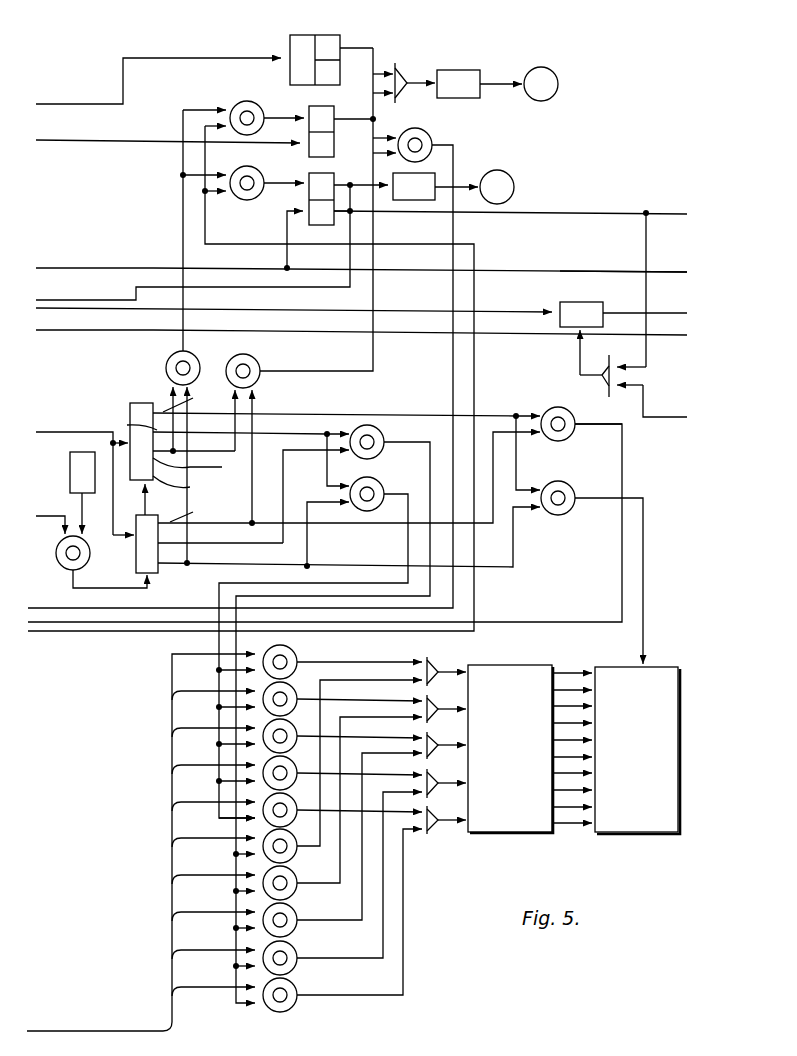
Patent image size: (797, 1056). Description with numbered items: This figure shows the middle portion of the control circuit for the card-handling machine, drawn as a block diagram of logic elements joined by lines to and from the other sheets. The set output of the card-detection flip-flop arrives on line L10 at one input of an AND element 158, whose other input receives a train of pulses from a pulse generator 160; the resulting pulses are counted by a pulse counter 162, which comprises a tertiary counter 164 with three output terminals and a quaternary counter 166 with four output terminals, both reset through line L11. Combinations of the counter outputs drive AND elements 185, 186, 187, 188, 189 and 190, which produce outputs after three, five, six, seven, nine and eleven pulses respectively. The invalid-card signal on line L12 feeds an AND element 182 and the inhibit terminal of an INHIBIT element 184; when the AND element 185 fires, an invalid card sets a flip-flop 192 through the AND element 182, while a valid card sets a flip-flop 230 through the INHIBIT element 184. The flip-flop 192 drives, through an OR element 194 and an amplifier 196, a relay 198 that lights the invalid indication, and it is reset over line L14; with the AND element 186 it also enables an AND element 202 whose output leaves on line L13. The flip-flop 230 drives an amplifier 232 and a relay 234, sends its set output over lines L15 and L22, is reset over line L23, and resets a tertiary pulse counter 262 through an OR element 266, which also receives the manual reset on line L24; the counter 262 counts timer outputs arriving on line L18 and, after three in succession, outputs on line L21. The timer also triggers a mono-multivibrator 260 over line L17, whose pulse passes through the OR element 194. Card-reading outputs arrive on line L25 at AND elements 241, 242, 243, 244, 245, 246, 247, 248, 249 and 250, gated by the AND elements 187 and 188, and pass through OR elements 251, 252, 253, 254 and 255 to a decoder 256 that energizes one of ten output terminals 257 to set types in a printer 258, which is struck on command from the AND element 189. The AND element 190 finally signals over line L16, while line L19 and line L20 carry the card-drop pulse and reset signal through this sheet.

The AND element 158 is at (58, 562).
The pulse generator 160 is at (70, 461).
The pulse counter 162 is at (141, 509).
The tertiary counter 164 is at (136, 572).
The quaternary counter 166 is at (137, 403).
The AND element 182 is at (269, 103).
The INHIBIT element 184 is at (254, 201).
The AND element 185 is at (166, 370).
The AND element 186 is at (260, 358).
The AND element 187 is at (387, 470).
The AND element 188 is at (384, 436).
The AND element 189 is at (573, 508).
The AND element 190 is at (563, 438).
The flip-flop 192 is at (328, 104).
The OR element 194 is at (403, 75).
The amplifier 196 is at (481, 73).
The relay 198 is at (554, 70).
The AND element 202 is at (433, 133).
The flip-flop 230 is at (334, 174).
The amplifier 232 is at (435, 175).
The relay 234 is at (513, 181).
The AND element 241 is at (297, 655).
The AND element 242 is at (297, 692).
The AND element 243 is at (297, 730).
The AND element 244 is at (297, 767).
The AND element 245 is at (296, 816).
The AND element 246 is at (296, 840).
The AND element 247 is at (301, 866).
The AND element 248 is at (294, 912).
The AND element 249 is at (294, 950).
The AND element 250 is at (294, 986).
The OR element 251 is at (428, 666).
The OR element 252 is at (428, 703).
The OR element 253 is at (428, 740).
The OR element 254 is at (428, 777).
The OR element 255 is at (428, 814).
The decoder 256 is at (521, 672).
The output terminals 257 is at (566, 662).
The printer 258 is at (661, 674).
The mono-multivibrator 260 is at (338, 38).
The tertiary pulse counter 262 is at (607, 300).
The OR element 266 is at (601, 380).
The line L10 is at (62, 512).
The line L11 is at (70, 432).
The line L12 is at (48, 631).
The line L13 is at (111, 609).
The line L14 is at (107, 139).
The line L15 is at (73, 296).
The line L16 is at (159, 623).
The line L17 is at (88, 104).
The line L18 is at (76, 311).
The line L19 is at (111, 331).
The line L20 is at (68, 267).
The line L21 is at (671, 313).
The line L22 is at (679, 213).
The line L23 is at (674, 264).
The line L24 is at (673, 417).
The line L25 is at (67, 1021).